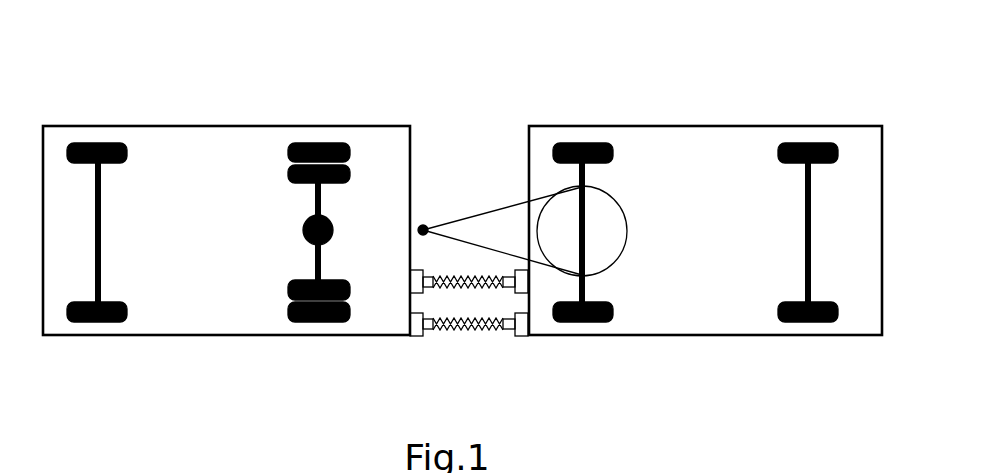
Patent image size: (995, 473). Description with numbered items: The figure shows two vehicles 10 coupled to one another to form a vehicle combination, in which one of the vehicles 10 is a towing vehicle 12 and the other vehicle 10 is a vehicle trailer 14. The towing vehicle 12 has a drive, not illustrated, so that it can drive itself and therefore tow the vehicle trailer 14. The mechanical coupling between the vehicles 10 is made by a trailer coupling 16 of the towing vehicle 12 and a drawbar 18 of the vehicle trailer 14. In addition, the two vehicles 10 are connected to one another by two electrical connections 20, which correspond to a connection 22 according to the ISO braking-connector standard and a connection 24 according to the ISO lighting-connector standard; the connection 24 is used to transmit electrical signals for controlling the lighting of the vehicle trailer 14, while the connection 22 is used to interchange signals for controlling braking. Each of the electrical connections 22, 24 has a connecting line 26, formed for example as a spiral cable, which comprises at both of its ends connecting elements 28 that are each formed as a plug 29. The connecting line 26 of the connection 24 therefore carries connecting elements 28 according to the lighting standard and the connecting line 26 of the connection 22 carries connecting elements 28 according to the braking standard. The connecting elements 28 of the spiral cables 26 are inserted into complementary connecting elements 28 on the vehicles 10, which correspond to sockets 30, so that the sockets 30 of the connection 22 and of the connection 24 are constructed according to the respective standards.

The vehicle 10 is at (328, 87).
The towing vehicle 12 is at (140, 126).
The vehicle trailer 14 is at (680, 126).
The trailer coupling 16 is at (424, 224).
The drawbar 18 is at (527, 200).
The electrical connection 20 is at (405, 355).
The connection according to ISO 7638 22 is at (495, 345).
The connection according to ISO 12098 24 is at (466, 250).
The connecting line 26 is at (478, 276).
The connecting element 28 is at (412, 291).
The plug 29 is at (428, 277).
The socket 30 is at (412, 275).